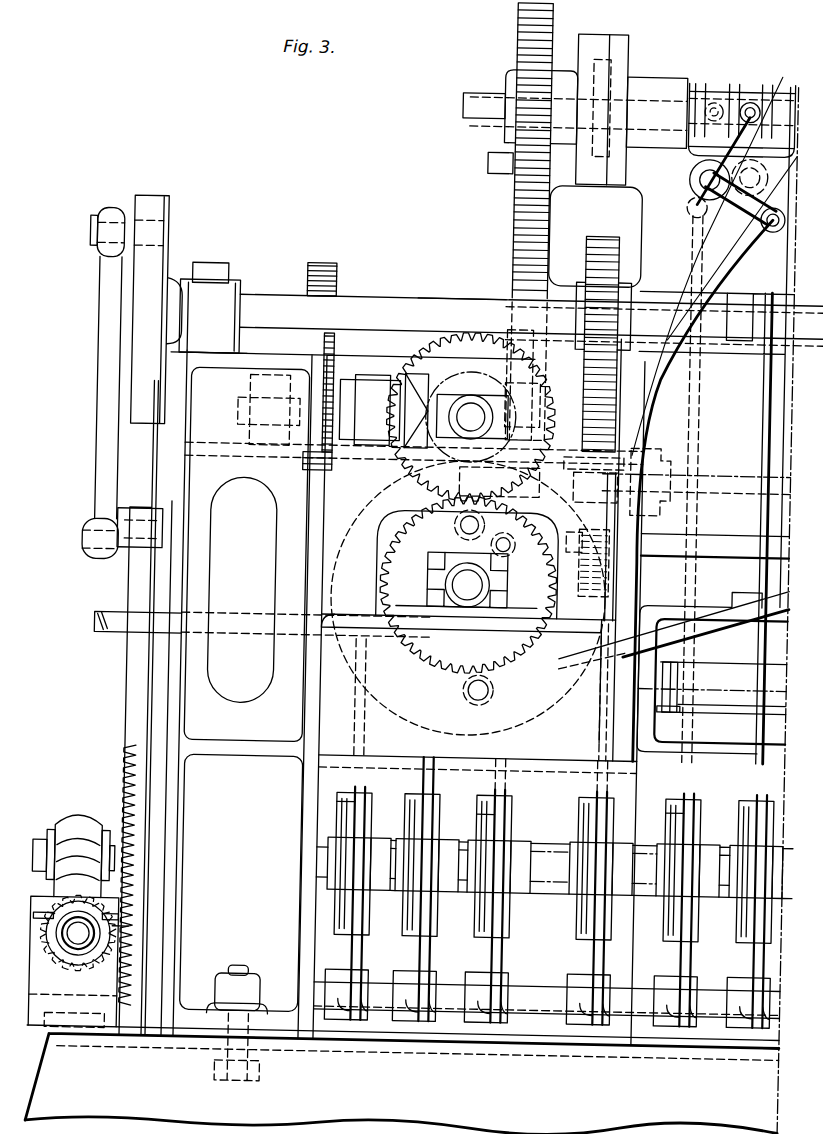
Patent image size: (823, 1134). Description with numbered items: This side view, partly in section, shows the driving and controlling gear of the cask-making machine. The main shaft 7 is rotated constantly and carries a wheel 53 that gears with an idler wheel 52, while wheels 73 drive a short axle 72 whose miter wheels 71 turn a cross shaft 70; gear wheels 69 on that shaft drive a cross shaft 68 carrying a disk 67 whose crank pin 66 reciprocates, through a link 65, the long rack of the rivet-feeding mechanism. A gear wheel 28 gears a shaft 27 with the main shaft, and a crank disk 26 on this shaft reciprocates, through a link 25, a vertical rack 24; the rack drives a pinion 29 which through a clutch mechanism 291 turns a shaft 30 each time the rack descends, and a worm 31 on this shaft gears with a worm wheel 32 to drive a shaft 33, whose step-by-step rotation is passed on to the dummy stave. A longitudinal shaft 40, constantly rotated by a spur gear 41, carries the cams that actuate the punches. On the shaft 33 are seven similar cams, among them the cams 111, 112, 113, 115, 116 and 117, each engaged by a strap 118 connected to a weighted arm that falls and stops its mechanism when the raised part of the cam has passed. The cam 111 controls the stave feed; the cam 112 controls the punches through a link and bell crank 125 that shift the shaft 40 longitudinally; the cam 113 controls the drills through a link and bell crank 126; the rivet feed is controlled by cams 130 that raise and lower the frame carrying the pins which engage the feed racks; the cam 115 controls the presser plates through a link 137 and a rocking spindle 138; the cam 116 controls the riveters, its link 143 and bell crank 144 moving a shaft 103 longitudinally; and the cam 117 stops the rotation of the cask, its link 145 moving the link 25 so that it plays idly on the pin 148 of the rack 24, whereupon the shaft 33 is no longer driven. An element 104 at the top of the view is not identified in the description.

The main shaft 7 is at (424, 302).
The vertical rack 24 is at (130, 712).
The link 25 is at (96, 452).
The crank disk 26 is at (158, 309).
The shaft 27 is at (364, 310).
The gear wheel 28 is at (584, 269).
The pinion 29 is at (73, 962).
The shaft 30 is at (78, 933).
The worm 31 is at (58, 903).
The worm wheel 32 is at (89, 822).
The shaft 33 is at (555, 878).
The longitudinal shaft 40 is at (721, 491).
The spur gear 41 is at (597, 427).
The idler wheel 52 is at (516, 159).
The wheel 53 is at (506, 257).
The link 65 is at (721, 623).
The crank pin 66 is at (492, 699).
The disk 67 is at (567, 678).
The cross shaft 68 is at (462, 586).
The gear wheels 69 is at (401, 519).
The cross shaft 70 is at (468, 396).
The miter wheels 71 is at (407, 374).
The short axle 72 is at (322, 376).
The wheels 73 is at (303, 472).
The shaft 103 is at (464, 117).
The gear 104 is at (506, 19).
The cam 111 is at (445, 921).
The cam 112 is at (518, 920).
The cam 113 is at (704, 916).
The cam 115 is at (617, 918).
The cam 116 is at (772, 924).
The cam 117 is at (372, 923).
The strap 118 is at (700, 810).
The link and bell crank 125 is at (499, 546).
The link and bell crank 126 is at (694, 767).
The cams 130 is at (672, 672).
The link 137 is at (611, 769).
The rocking spindle 138 is at (715, 550).
The link 143 is at (759, 420).
The bell crank 144 is at (717, 200).
The link 145 is at (362, 706).
The pin 148 is at (84, 559).
The clutch mechanism 291 is at (117, 932).